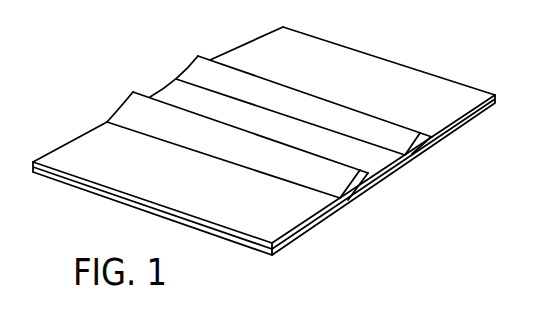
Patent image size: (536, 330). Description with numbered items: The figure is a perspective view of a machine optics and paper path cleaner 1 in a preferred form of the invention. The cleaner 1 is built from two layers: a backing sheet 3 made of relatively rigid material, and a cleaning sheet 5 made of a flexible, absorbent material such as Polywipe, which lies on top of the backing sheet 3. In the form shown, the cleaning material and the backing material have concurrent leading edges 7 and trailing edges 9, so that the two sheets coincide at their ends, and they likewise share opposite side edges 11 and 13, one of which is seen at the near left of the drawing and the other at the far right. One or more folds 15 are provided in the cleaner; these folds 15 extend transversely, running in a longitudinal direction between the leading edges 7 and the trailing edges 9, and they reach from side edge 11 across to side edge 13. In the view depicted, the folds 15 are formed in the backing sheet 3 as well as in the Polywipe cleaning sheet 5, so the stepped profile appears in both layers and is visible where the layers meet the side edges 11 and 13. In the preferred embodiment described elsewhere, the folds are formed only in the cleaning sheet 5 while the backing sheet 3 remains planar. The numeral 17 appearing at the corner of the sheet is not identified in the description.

The machine optics and paper path cleaner 1 is at (264, 136).
The backing sheet 3 is at (365, 192).
The cleaning sheet 5 is at (314, 50).
The leading edges 7 is at (414, 69).
The trailing edges 9 is at (170, 221).
The side edge 11 is at (93, 128).
The side edge 13 is at (454, 133).
The folds 15 is at (188, 67).
The adjacent panel reference 17 is at (516, 328).